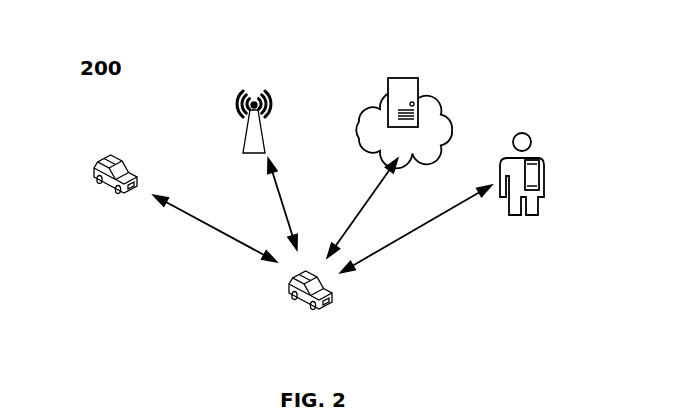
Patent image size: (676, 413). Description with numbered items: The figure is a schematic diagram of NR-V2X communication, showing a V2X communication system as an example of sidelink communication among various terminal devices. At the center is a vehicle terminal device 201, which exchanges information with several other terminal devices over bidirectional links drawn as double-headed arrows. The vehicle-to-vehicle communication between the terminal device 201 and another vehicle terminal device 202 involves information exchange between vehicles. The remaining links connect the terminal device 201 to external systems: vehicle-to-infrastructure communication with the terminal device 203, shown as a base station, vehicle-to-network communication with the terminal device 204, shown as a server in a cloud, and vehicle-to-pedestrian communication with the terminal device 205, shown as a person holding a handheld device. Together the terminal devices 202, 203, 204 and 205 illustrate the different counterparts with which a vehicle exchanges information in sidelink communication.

The terminal device 201 is at (319, 302).
The terminal device 202 is at (102, 163).
The terminal device 203 is at (249, 106).
The terminal device 204 is at (404, 110).
The terminal device 205 is at (522, 157).